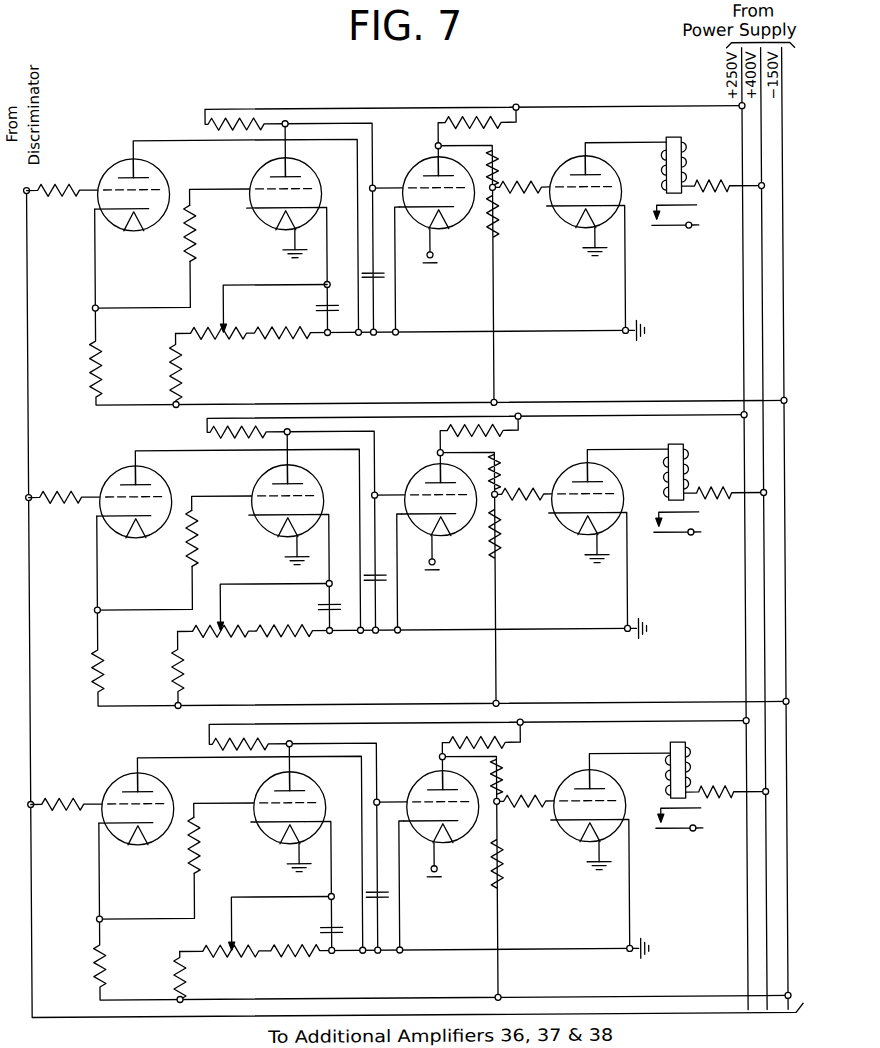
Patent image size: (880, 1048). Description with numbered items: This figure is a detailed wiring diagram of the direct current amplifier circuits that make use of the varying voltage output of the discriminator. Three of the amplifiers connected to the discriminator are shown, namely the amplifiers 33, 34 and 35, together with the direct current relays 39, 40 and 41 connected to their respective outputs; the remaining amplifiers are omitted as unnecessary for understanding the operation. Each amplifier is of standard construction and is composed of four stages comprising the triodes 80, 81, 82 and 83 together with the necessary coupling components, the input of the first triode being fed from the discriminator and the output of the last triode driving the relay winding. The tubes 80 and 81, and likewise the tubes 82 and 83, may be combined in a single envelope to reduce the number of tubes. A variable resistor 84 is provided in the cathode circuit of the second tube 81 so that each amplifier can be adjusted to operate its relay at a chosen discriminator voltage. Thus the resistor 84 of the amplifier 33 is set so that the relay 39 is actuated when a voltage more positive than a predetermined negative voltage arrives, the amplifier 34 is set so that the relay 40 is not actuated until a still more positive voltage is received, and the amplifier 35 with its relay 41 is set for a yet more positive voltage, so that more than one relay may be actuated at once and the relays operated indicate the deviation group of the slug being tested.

The amplifier 33 is at (324, 95).
The amplifier 34 is at (97, 475).
The amplifier 35 is at (103, 778).
The relay 39 is at (678, 140).
The relay 40 is at (678, 447).
The relay 41 is at (678, 745).
The triode 80 is at (109, 172).
The triode 81 is at (309, 178).
The triode 82 is at (411, 179).
The triode 83 is at (558, 179).
The variable resistor 84 is at (226, 346).